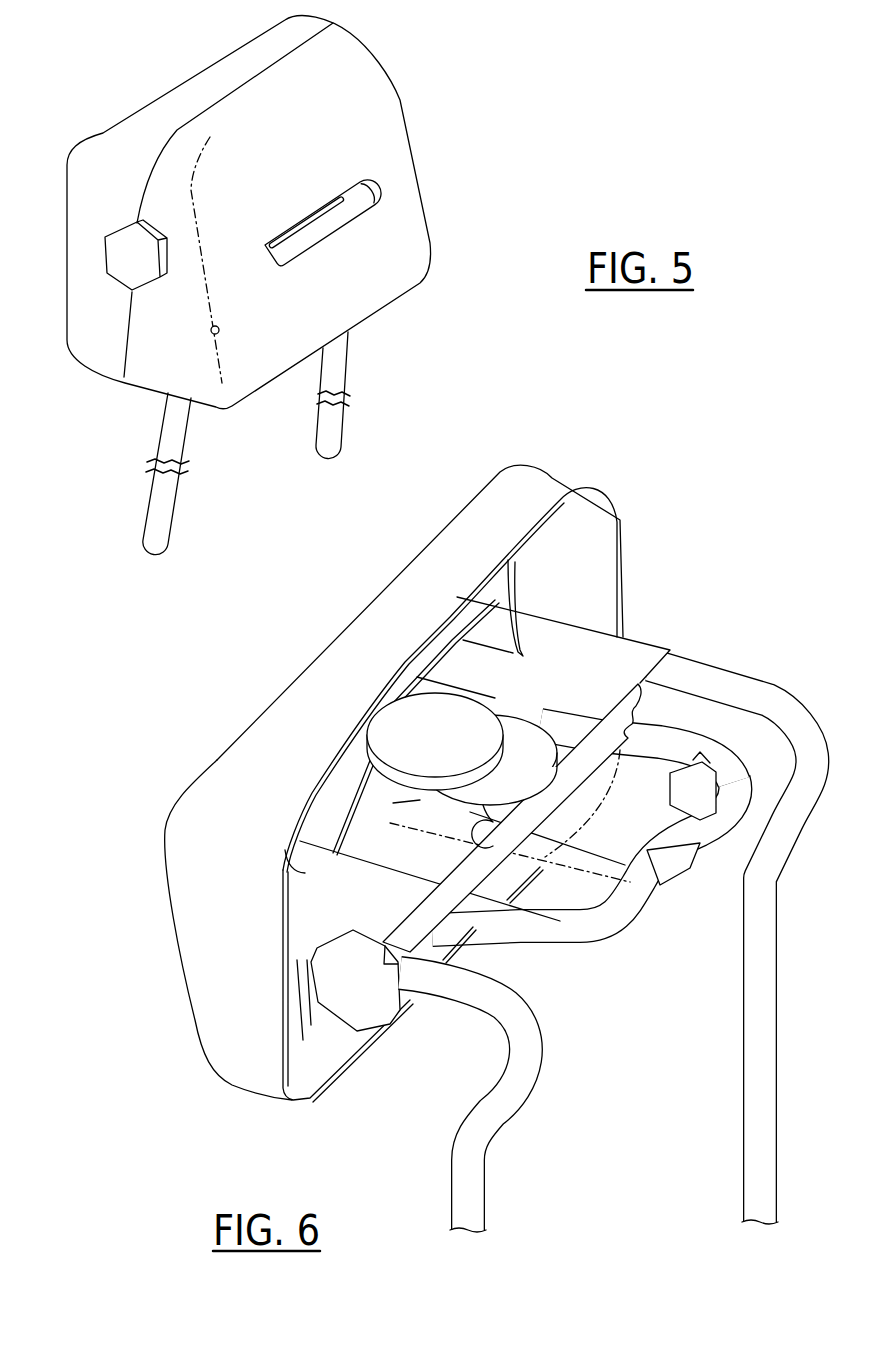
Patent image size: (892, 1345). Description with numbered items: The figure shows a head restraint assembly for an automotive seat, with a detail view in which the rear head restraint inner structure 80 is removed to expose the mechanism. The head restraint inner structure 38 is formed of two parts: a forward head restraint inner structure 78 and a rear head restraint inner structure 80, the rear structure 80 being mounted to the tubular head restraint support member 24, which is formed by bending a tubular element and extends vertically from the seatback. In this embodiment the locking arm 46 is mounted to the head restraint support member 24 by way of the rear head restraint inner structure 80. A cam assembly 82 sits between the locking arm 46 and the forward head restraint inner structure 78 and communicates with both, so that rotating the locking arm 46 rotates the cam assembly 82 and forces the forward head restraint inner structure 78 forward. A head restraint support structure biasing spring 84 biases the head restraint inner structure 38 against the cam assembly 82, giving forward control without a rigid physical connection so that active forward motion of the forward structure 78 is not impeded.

In FIG. 5, the head restraint support member 24 is at (355, 353).
In FIG. 5, the head restraint inner structure 38 is at (392, 43).
In FIG. 6, the locking arm 46 is at (427, 912).
In FIG. 5, the forward head restraint inner structure 78 is at (220, 63).
In FIG. 6, the forward head restraint inner structure 78 is at (437, 550).
In FIG. 5, the rear head restraint inner structure 80 is at (403, 133).
In FIG. 6, the cam assembly 82 is at (527, 720).
In FIG. 6, the head restraint support structure biasing spring 84 is at (597, 860).